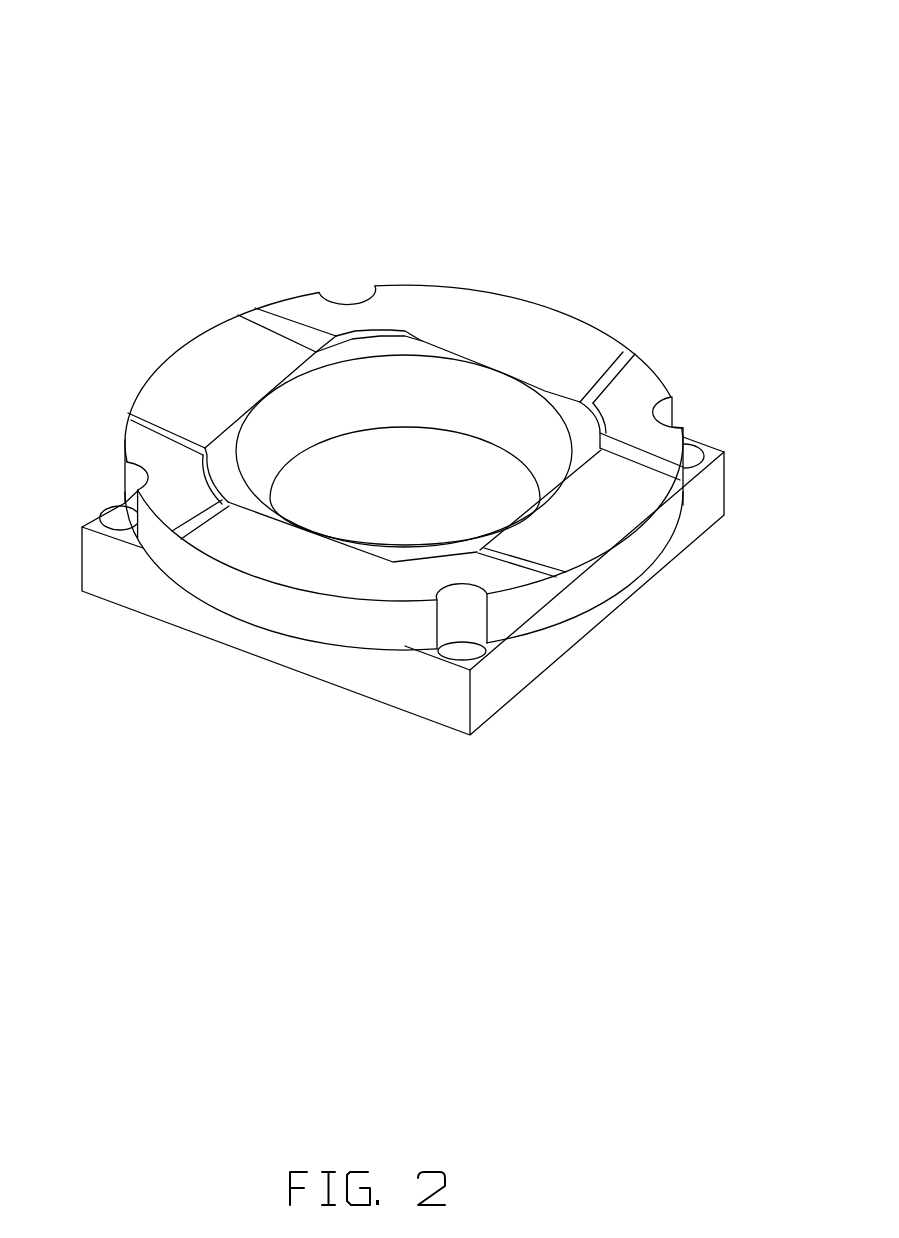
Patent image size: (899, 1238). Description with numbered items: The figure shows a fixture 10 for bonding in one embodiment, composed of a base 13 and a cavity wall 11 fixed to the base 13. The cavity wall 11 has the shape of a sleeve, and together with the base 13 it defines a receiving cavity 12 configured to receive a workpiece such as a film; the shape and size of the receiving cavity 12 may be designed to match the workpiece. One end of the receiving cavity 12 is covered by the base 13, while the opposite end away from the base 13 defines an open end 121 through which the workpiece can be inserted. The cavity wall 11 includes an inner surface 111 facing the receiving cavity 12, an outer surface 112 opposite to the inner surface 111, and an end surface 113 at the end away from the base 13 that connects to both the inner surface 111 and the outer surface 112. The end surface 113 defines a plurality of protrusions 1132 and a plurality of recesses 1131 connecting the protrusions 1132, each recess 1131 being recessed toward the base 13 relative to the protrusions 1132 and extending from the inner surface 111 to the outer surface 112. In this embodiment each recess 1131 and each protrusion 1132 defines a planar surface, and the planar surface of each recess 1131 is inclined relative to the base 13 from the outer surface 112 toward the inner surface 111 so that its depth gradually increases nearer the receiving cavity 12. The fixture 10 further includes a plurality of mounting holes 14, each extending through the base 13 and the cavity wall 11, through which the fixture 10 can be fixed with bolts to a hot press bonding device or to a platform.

The fixture 10 is at (176, 60).
The cavity wall 11 is at (362, 628).
The inner surface 111 is at (300, 417).
The outer surface 112 is at (219, 584).
The end surface 113 is at (720, 287).
The recess 1131 is at (588, 360).
The protrusion 1132 is at (632, 393).
The receiving cavity 12 is at (390, 452).
The open end 121 is at (498, 322).
The base 13 is at (527, 660).
The mounting hole 14 is at (118, 522).